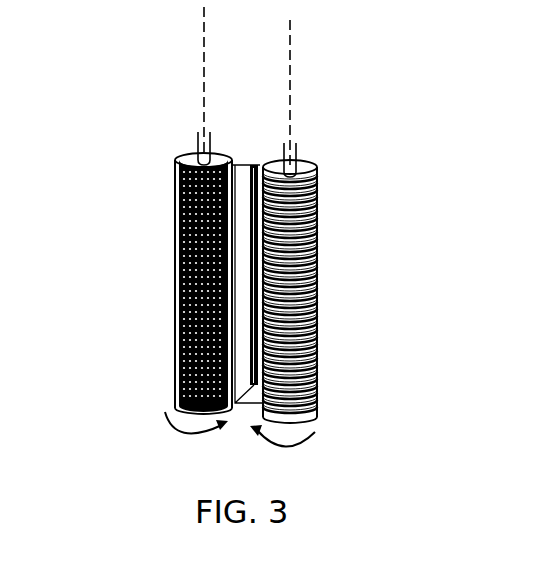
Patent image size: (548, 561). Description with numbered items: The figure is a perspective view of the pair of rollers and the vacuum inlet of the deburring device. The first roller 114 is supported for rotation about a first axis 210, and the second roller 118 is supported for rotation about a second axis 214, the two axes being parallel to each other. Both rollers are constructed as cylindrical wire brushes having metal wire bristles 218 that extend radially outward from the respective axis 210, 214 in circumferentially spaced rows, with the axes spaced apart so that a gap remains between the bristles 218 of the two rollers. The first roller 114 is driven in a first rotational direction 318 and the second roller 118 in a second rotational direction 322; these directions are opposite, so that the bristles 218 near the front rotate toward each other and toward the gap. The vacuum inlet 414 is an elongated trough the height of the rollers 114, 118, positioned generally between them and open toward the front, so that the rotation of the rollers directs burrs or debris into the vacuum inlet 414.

The second axis 214 is at (200, 78).
The first axis 210 is at (293, 78).
The vacuum inlet 414 is at (176, 184).
The second roller 118 is at (175, 266).
The first roller 114 is at (289, 272).
The bristles 218 is at (175, 334).
The second rotational direction 322 is at (190, 436).
The first rotational direction 318 is at (307, 442).